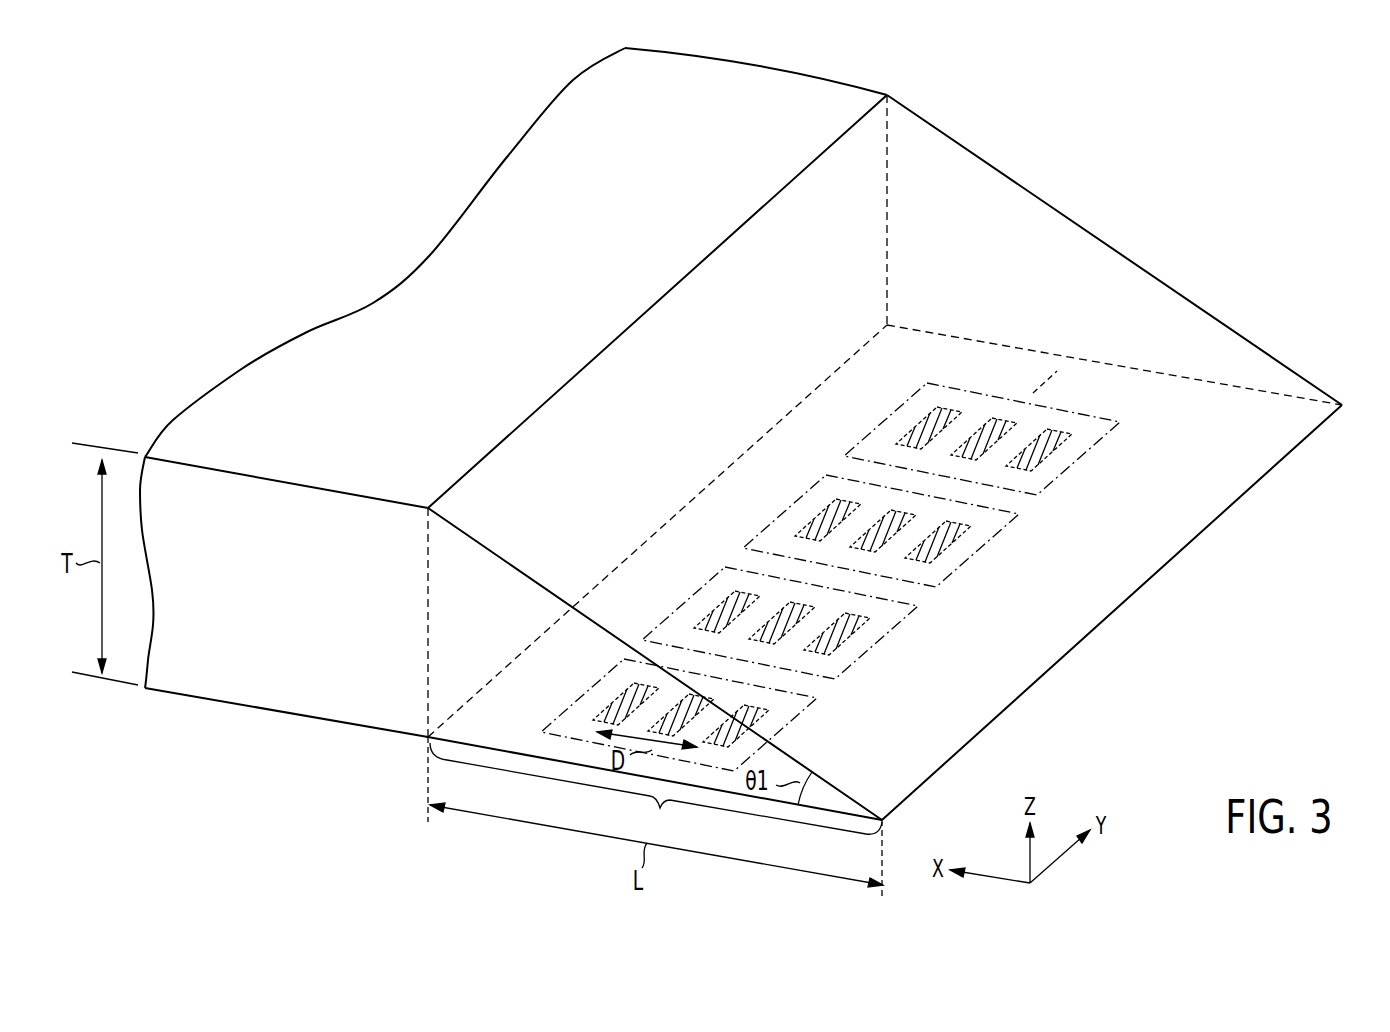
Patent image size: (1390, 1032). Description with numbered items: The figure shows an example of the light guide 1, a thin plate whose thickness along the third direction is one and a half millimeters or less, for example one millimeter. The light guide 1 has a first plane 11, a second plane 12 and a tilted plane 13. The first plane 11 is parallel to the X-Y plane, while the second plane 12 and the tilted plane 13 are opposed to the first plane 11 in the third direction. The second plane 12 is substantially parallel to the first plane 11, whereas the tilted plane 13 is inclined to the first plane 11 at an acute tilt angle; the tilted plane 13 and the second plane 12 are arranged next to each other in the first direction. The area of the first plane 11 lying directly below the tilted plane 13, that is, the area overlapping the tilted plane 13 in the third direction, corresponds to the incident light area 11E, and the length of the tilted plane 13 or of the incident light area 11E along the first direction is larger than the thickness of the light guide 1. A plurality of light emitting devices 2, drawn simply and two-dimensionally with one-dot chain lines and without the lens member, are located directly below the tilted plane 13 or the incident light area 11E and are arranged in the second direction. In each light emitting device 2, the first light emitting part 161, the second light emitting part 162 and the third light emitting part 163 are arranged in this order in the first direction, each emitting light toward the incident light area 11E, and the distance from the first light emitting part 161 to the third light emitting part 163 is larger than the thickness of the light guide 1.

The light guide 1 is at (1342, 405).
The light emitting device 2 is at (990, 535).
The first plane 11 is at (248, 712).
The incident light area 11E is at (655, 788).
The second plane 12 is at (320, 400).
The tilted plane 13 is at (1020, 230).
The first light emitting part 161 is at (1060, 430).
The second light emitting part 162 is at (1003, 417).
The third light emitting part 163 is at (947, 403).